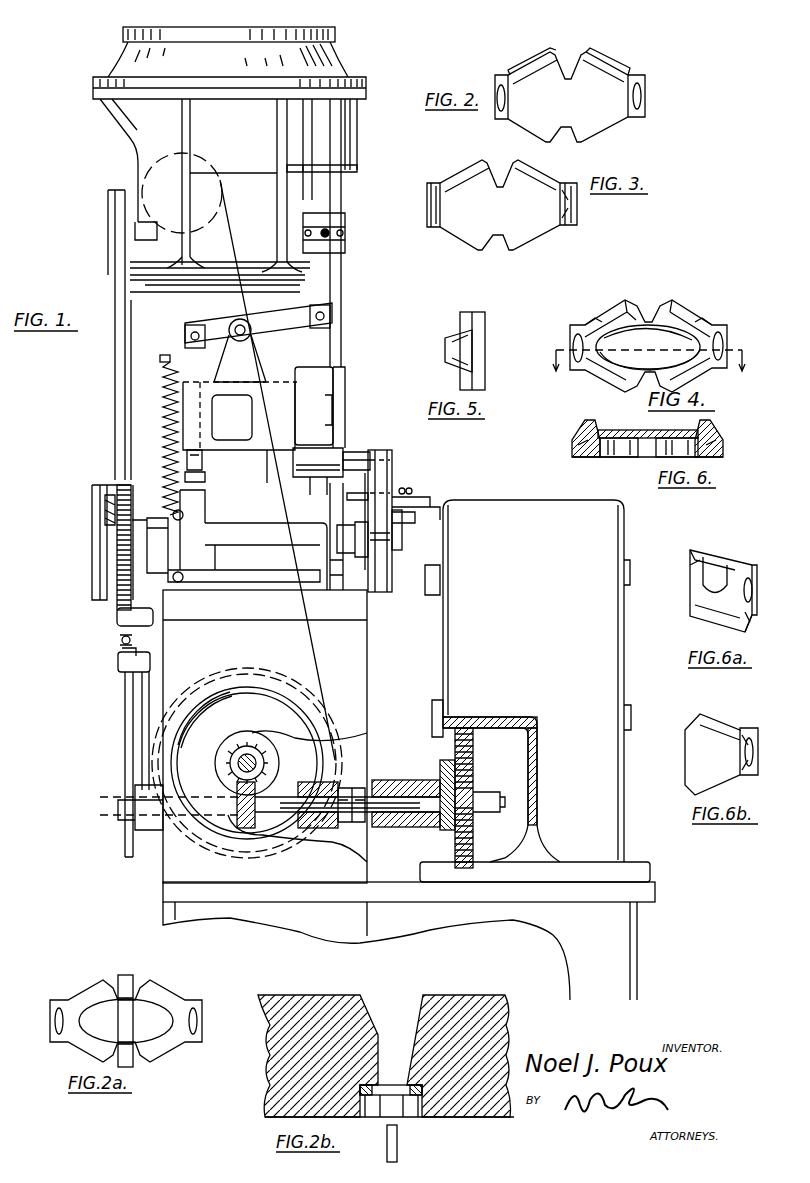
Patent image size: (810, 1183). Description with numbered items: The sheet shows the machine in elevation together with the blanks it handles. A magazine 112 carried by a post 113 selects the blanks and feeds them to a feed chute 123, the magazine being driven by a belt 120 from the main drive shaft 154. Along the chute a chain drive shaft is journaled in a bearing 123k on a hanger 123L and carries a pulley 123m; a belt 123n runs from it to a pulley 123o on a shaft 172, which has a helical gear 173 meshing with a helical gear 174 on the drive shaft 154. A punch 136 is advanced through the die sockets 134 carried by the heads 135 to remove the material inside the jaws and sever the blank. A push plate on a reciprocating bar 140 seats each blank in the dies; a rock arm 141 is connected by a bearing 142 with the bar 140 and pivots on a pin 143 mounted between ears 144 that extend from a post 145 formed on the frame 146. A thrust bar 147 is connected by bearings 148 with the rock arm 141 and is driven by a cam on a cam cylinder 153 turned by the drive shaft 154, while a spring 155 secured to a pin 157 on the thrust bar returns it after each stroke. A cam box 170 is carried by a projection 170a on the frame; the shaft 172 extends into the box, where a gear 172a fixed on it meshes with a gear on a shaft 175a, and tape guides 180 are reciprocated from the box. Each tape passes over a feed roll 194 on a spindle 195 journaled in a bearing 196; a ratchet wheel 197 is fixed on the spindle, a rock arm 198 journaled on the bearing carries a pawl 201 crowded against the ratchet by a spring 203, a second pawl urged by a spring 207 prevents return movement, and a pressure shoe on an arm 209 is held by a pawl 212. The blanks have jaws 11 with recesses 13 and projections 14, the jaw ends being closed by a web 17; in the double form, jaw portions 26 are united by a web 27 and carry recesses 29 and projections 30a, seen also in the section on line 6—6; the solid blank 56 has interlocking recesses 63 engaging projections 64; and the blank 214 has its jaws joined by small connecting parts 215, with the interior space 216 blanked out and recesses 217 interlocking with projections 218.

In FIG. 1, the hopper cap 112 is at (312, 69).
In FIG. 1, the upper cross bar 123L is at (286, 167).
In FIG. 1, the circular guide 123k is at (219, 244).
In FIG. 1, the left frame plate 123m is at (116, 283).
In FIG. 1, the vertical post 123 is at (336, 298).
In FIG. 1, the horizontal rails 113 is at (204, 293).
In FIG. 1, the rocker arm 141 is at (294, 317).
In FIG. 1, the arm end block 120 is at (187, 329).
In FIG. 1, the arm end block 142 is at (323, 318).
In FIG. 1, the pivot 143 is at (239, 319).
In FIG. 1, the pivot body 144 is at (263, 366).
In FIG. 1, the slide block 148 is at (186, 347).
In FIG. 1, the right guide block 140 is at (334, 351).
In FIG. 1, the spring anchor 157 is at (165, 359).
In FIG. 1, the frame plate 123n is at (122, 383).
In FIG. 1, the spring 155 is at (165, 437).
In FIG. 1, the connecting rod 145 is at (276, 461).
In FIG. 1, the bracket 147 is at (203, 458).
In FIG. 1, the frame 196 is at (247, 529).
In FIG. 1, the rack gear 207 is at (106, 517).
In FIG. 1, the guide plate 197 is at (116, 606).
In FIG. 1, the bolt 203 is at (120, 639).
In FIG. 1, the bracket 201 is at (119, 651).
In FIG. 1, the rod 198 is at (146, 699).
In FIG. 1, the lower frame bar 123o is at (122, 851).
In FIG. 1, the disk 136 is at (352, 496).
In FIG. 1, the bracket plate 212 is at (389, 484).
In FIG. 1, the screws 180 is at (411, 489).
In FIG. 1, the hub 209 is at (394, 545).
In FIG. 1, the column 195 is at (345, 582).
In FIG. 1, the boss 194 is at (392, 590).
In FIG. 1, the gear housing 146 is at (246, 617).
In FIG. 1, the cam 153 is at (362, 753).
In FIG. 1, the pinion 174 is at (270, 763).
In FIG. 1, the shaft 154 is at (237, 764).
In FIG. 1, the worm 173 is at (246, 824).
In FIG. 1, the drive shaft 172 is at (368, 796).
In FIG. 1, the drive gear 172a is at (477, 773).
In FIG. 1, the motor housing 170 is at (617, 670).
In FIG. 1, the lug 175a is at (632, 719).
In FIG. 1, the base 170a is at (625, 904).
In FIG. 2, the clip body 56 is at (598, 72).
In FIG. 2, the clip arm end 64 is at (512, 72).
In FIG. 3, the clip arm end 64 is at (427, 222).
In FIG. 2, the eye opening 63 is at (642, 96).
In FIG. 4, the ring body 27 is at (652, 328).
In FIG. 6, the ring body 27 is at (617, 431).
In FIG. 4, the arm 26 is at (624, 304).
In FIG. 6, the arm 26 is at (616, 459).
In FIG. 4, the lug 30a is at (592, 322).
In FIG. 5, the lug 30a is at (455, 366).
In FIG. 6, the lug 30a is at (578, 429).
In FIG. 4, the eye 29 is at (727, 342).
In FIG. 6, the eye 29 is at (722, 450).
In FIG. 4, the section line 6 is at (647, 370).
In FIG. 6A, the clip body 17 is at (694, 592).
In FIG. 6A, the clip arm 11 is at (703, 553).
In FIG. 6A, the eye 13 is at (753, 587).
In FIG. 6A, the end block 14 is at (752, 622).
In FIG. 6B, the end block 14 is at (755, 752).
In FIG. 2A, the ring body 216 is at (160, 1010).
In FIG. 2A, the knife 214 is at (150, 993).
In FIG. 2B, the knife 214 is at (390, 1100).
In FIG. 2A, the slot 215 is at (133, 996).
In FIG. 2A, the eye 217 is at (55, 1026).
In FIG. 2B, the die block 135 is at (313, 1001).
In FIG. 2B, the clip strip 134 is at (368, 1088).
In FIG. 2B, the clip end 218 is at (364, 1112).